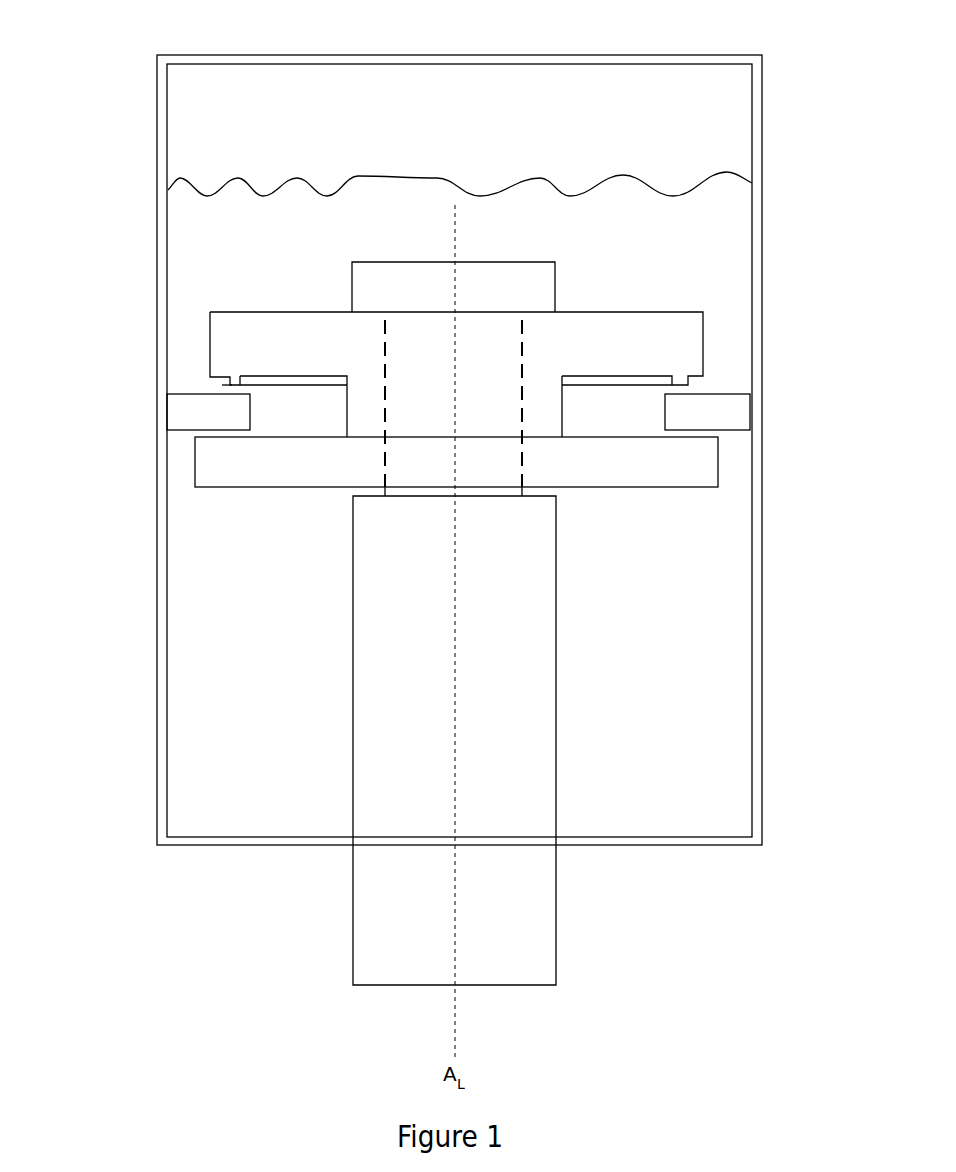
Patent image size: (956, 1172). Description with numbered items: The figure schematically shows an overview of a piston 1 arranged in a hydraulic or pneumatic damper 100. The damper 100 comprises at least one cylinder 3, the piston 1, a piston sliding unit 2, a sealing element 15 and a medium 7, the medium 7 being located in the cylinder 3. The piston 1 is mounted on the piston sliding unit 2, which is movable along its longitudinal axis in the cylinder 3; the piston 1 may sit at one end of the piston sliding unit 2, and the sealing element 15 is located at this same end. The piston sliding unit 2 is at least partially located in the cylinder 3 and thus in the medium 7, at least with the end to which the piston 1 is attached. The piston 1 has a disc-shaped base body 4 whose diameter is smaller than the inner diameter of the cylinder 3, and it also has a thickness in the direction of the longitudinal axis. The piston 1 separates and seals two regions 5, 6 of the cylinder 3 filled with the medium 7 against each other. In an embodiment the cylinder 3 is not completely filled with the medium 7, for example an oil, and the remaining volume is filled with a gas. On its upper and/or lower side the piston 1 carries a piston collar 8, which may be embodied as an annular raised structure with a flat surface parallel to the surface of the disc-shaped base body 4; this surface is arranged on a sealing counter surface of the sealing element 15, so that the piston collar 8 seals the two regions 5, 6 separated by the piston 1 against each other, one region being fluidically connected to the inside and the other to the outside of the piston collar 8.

The piston 1 is at (210, 338).
The piston sliding unit 2 is at (447, 702).
The cylinder 3 is at (762, 530).
The disc-shaped base body 4 is at (568, 333).
The region 5 is at (690, 208).
The region 6 is at (712, 670).
The medium 7 is at (314, 226).
The piston collar 8 is at (232, 386).
The sealing element 15 is at (697, 386).
The damper 100 is at (664, 945).